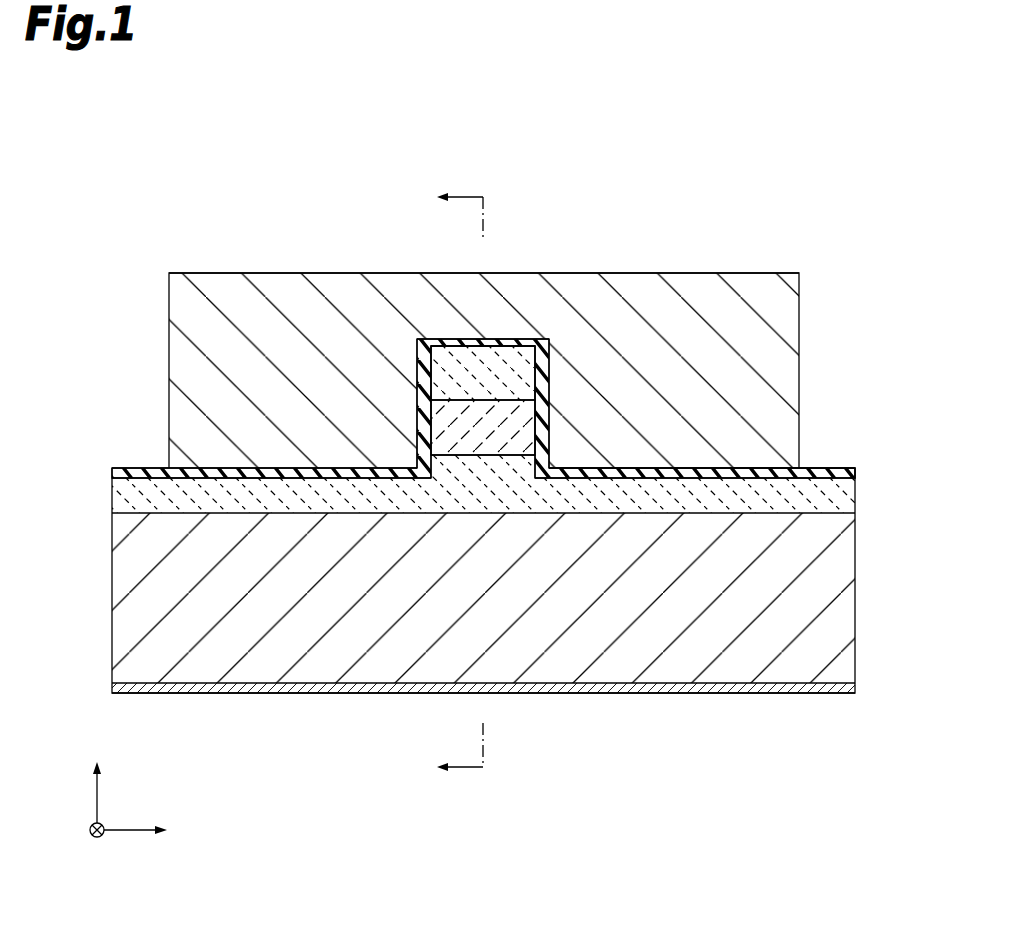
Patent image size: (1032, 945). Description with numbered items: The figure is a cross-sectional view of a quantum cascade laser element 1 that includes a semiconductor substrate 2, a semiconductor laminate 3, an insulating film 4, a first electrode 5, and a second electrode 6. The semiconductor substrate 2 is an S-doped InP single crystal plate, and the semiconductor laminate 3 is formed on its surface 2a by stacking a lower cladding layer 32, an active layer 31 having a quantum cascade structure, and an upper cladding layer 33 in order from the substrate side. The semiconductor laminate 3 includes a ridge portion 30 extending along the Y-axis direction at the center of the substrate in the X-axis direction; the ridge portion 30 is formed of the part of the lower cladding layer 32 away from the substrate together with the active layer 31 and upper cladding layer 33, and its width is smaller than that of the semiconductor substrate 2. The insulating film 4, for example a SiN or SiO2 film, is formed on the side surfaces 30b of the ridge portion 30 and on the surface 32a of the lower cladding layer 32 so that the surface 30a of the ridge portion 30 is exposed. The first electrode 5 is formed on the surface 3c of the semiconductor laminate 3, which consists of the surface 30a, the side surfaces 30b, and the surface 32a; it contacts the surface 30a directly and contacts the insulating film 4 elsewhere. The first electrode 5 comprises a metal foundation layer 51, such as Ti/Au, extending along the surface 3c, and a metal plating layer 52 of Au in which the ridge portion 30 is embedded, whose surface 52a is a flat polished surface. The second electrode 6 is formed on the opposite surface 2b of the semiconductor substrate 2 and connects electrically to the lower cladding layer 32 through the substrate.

The quantum cascade laser element 1 is at (690, 182).
The semiconductor substrate 2 is at (851, 612).
The surface of the semiconductor substrate 2a is at (820, 510).
The surface of the semiconductor substrate 2b is at (815, 686).
The semiconductor laminate 3 is at (101, 489).
The surface of the semiconductor laminate 3c is at (470, 325).
The insulating film 4 is at (837, 468).
The first electrode 5 is at (212, 262).
The second electrode 6 is at (298, 694).
The ridge portion 30 is at (446, 329).
The surface of the ridge portion 30a is at (498, 344).
The side surfaces of the ridge portion 30b is at (418, 428).
The active layer 31 is at (497, 442).
The lower cladding layer 32 is at (497, 498).
The surface of the lower cladding layer 32a is at (213, 466).
The upper cladding layer 33 is at (497, 386).
The metal foundation layer 51 is at (752, 466).
The metal plating layer 52 is at (800, 318).
The surface of the metal plating layer 52a is at (740, 273).